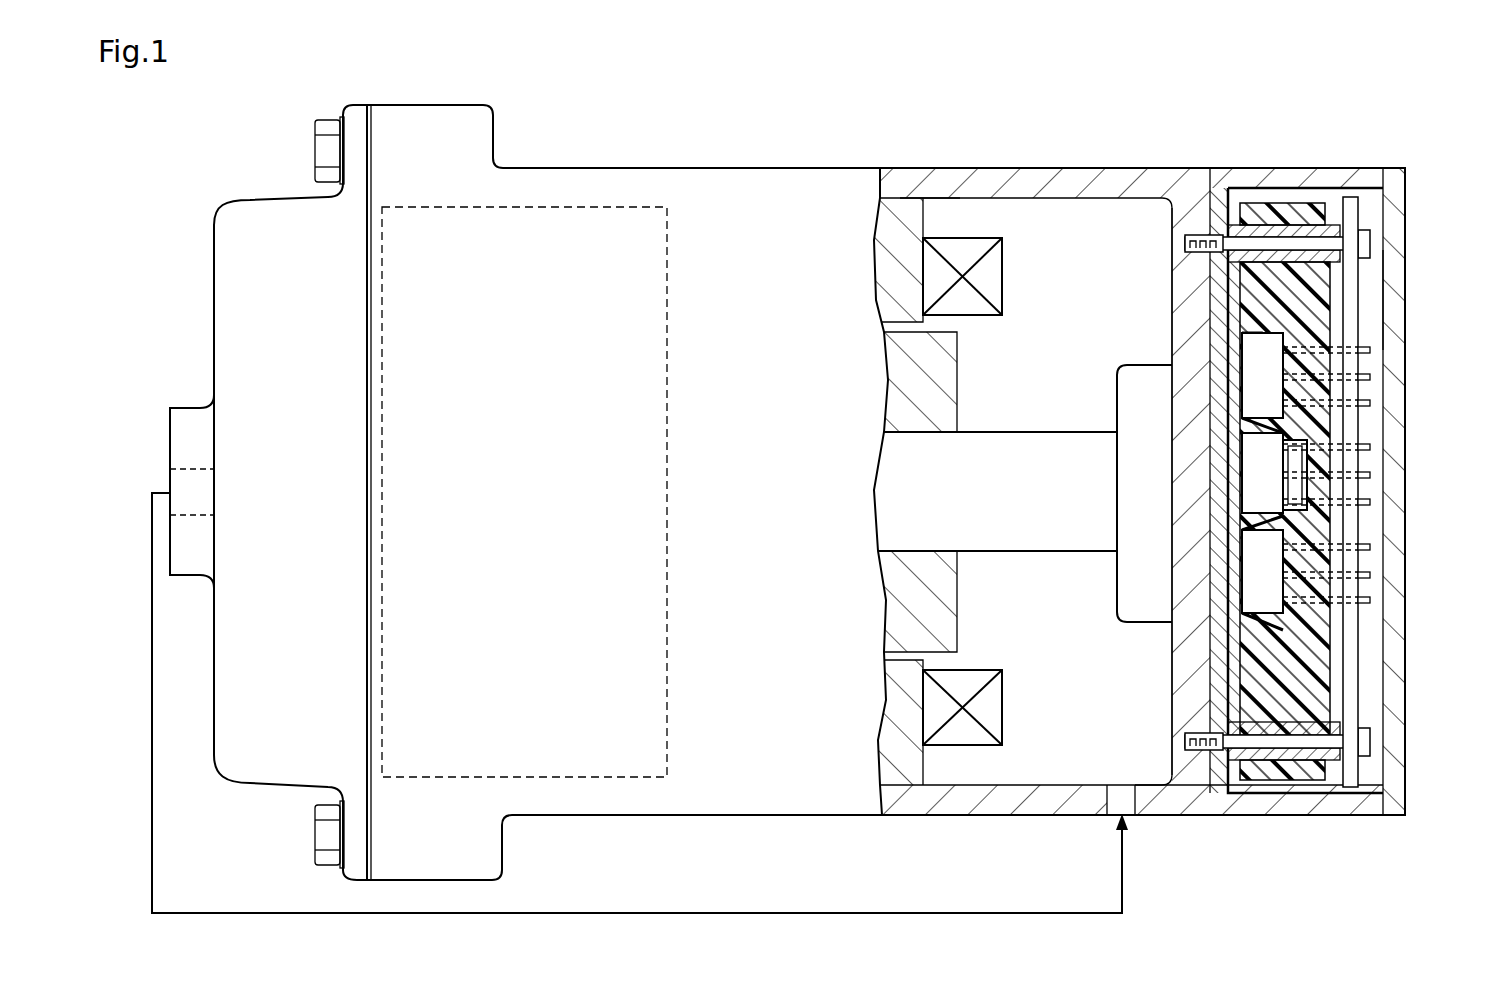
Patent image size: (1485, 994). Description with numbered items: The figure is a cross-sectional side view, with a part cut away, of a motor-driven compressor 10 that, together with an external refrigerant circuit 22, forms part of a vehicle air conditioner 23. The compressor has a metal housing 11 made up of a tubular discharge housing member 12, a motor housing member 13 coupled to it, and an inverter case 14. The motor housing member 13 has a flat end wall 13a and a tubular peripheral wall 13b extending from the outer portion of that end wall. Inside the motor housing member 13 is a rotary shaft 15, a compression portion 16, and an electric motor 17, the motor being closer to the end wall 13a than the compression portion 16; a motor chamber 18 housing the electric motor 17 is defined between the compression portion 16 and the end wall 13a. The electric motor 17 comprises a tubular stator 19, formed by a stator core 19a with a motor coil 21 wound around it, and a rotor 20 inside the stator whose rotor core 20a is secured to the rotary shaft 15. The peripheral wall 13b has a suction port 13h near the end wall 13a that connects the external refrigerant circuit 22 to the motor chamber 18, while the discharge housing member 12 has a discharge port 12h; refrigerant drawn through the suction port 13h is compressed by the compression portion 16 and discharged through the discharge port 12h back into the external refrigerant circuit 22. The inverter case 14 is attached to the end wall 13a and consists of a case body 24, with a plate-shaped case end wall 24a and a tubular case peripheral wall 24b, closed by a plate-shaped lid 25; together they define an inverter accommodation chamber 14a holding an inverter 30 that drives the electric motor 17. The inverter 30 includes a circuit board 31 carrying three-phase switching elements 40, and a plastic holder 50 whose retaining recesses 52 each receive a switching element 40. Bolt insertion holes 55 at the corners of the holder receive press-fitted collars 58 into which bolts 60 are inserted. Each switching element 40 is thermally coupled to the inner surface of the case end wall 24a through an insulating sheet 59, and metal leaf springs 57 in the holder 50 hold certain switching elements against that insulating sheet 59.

The motor-driven compressor 10 is at (254, 150).
The housing 11 is at (680, 168).
The discharge housing member 12 is at (214, 248).
The discharge port 12h is at (215, 472).
The motor housing member 13 is at (905, 168).
The end wall 13a is at (1172, 235).
The peripheral wall 13b is at (1107, 178).
The suction port 13h is at (1110, 790).
The inverter case 14 is at (1362, 168).
The inverter accommodation chamber 14a is at (1371, 297).
The rotary shaft 15 is at (993, 551).
The compression portion 16 is at (568, 207).
The electric motor 17 is at (922, 188).
The motor chamber 18 is at (1010, 634).
The stator 19 is at (803, 240).
The stator core 19a is at (882, 262).
The rotor 20 is at (890, 600).
The rotor core 20a is at (950, 386).
The motor coil 21 is at (928, 286).
The external refrigerant circuit 22 is at (1124, 868).
The vehicle air conditioner 23 is at (1168, 904).
The case body 24 is at (1292, 815).
The case end wall 24a is at (1178, 378).
The case peripheral wall 24b is at (1250, 815).
The lid 25 is at (1393, 815).
The inverter 30 is at (1380, 204).
The circuit board 31 is at (1350, 335).
The switching elements 40 is at (1248, 418).
The holder 50 is at (1270, 208).
The retaining recesses 52 is at (1245, 345).
The bolt insertion hole 55 is at (1318, 232).
The spring 57 is at (1250, 490).
The collar 58 is at (1245, 212).
The insulating sheet 59 is at (1235, 660).
The bolt 60 is at (1372, 242).